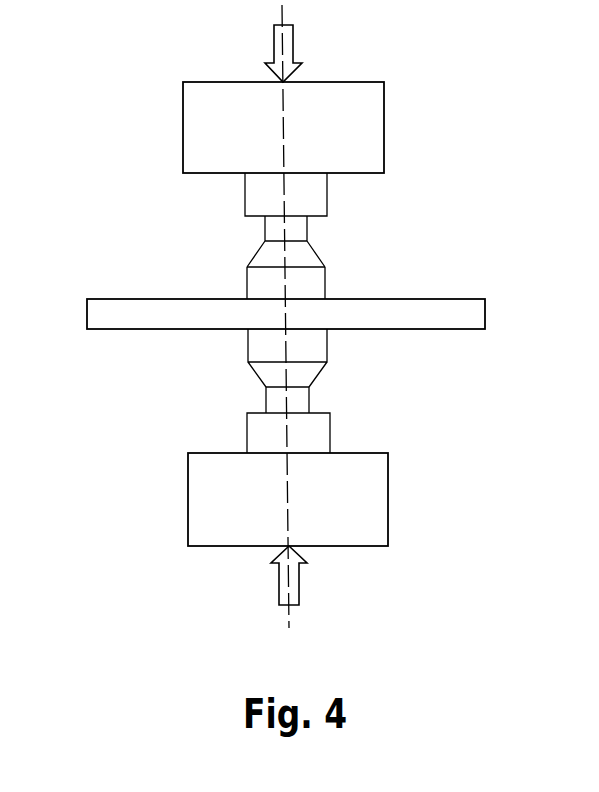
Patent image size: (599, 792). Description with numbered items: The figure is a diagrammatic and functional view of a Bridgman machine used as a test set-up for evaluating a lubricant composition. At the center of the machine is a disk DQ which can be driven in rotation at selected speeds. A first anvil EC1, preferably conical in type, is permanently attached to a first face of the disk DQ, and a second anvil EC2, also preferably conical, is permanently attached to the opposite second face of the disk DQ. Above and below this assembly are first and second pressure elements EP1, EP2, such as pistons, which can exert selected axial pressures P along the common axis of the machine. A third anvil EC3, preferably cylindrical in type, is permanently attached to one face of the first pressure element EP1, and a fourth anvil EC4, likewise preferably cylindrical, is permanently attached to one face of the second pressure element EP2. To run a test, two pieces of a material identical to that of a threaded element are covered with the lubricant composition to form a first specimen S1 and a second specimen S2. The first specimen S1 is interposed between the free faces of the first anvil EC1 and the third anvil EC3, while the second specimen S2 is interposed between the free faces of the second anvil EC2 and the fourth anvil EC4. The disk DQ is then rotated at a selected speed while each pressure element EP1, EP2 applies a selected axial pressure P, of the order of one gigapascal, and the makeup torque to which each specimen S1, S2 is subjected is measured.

The axial pressure P is at (293, 50).
The first pressure element EP1 is at (183, 140).
The second pressure element EP2 is at (188, 520).
The third anvil EC3 is at (245, 198).
The fourth anvil EC4 is at (247, 440).
The first anvil EC1 is at (247, 290).
The second anvil EC2 is at (254, 368).
The first specimen S1 is at (307, 229).
The second specimen S2 is at (309, 400).
The disk DQ is at (87, 322).